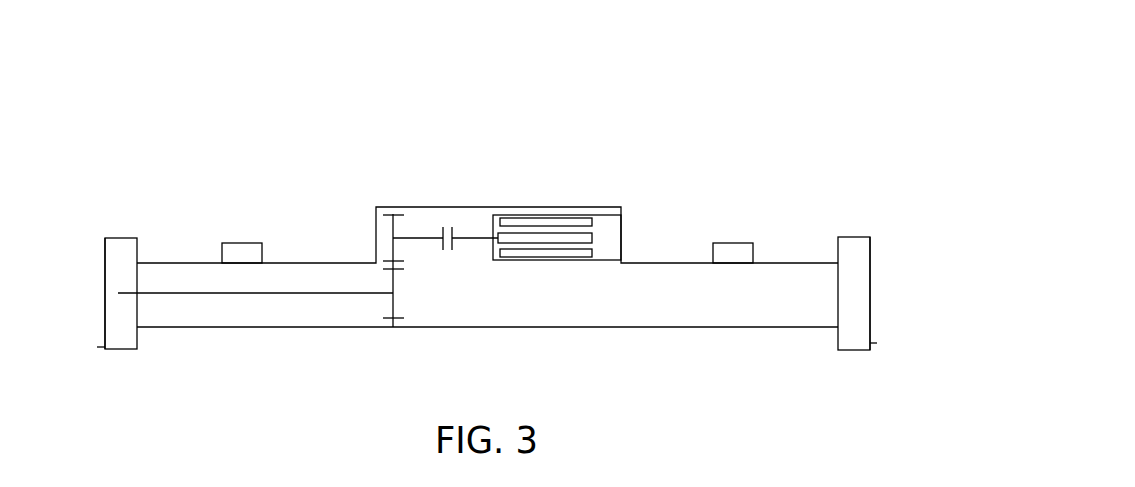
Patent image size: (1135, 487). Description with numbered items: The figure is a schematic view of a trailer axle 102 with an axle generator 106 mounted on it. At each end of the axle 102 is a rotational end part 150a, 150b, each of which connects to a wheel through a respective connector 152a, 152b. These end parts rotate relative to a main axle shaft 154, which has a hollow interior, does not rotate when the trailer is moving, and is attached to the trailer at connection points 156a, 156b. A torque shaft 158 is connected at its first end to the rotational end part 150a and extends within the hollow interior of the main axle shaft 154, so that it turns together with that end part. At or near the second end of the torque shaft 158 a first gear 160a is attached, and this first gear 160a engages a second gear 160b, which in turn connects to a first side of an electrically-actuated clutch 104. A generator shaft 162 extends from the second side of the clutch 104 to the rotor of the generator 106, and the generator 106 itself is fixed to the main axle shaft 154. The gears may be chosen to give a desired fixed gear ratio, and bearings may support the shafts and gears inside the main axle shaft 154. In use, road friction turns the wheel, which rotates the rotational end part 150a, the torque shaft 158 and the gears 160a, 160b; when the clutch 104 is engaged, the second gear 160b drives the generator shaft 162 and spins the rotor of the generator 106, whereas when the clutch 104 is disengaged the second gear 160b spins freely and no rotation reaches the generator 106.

The axle 102 is at (784, 76).
The electrically-actuated clutch 104 is at (444, 226).
The generator 106 is at (565, 215).
The rotational end part 150a is at (123, 250).
The rotational end part 150b is at (853, 237).
The connector 152a is at (100, 236).
The connector 152b is at (875, 235).
The main axle shaft 154 is at (183, 260).
The connection point 156a is at (242, 242).
The connection point 156b is at (733, 242).
The torque shaft 158 is at (283, 293).
The first gear 160a is at (393, 322).
The second gear 160b is at (393, 215).
The generator shaft 162 is at (475, 240).